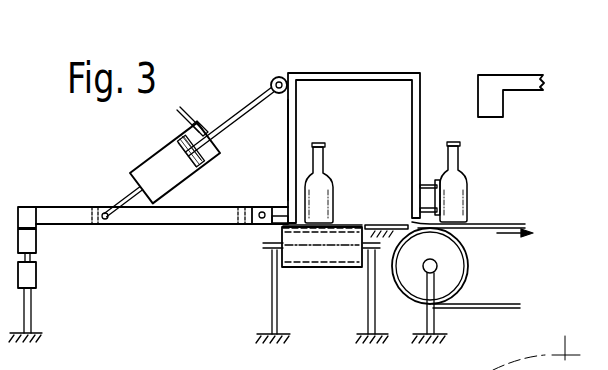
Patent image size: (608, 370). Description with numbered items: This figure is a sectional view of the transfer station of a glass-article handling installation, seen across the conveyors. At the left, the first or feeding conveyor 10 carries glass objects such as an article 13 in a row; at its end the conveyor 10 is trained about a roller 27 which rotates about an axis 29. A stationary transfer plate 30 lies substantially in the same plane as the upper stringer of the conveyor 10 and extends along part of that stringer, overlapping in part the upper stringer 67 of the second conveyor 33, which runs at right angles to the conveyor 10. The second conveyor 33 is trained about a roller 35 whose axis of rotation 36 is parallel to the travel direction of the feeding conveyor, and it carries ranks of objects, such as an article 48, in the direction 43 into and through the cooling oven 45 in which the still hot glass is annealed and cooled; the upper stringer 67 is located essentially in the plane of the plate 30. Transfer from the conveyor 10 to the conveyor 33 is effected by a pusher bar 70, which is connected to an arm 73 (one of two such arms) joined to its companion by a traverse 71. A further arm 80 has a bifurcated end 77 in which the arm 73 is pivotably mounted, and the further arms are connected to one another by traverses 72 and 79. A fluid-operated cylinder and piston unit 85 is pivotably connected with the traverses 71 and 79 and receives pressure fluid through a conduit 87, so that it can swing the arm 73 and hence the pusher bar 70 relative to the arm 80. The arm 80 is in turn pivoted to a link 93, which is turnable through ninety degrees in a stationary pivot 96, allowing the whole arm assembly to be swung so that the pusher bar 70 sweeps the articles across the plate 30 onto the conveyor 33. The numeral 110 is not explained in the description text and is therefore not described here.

The first or feeding conveyor 10 is at (345, 266).
The article 13 is at (331, 172).
The roller 27 is at (303, 263).
The axis 29 is at (272, 252).
The stationary transfer plate 30 is at (384, 223).
The second conveyor 33 is at (520, 308).
The roller 35 is at (467, 283).
The axis of rotation 36 is at (438, 263).
The direction 43 is at (532, 238).
The cooling oven 45 is at (491, 80).
The article 48 is at (468, 172).
The upper stringer 67 is at (500, 224).
The pusher bar 70 is at (431, 204).
The traverse 71 is at (291, 78).
The traverse 72 is at (238, 218).
The arm 73 is at (286, 154).
The bifurcated end 77 is at (258, 225).
The traverse 79 is at (92, 208).
The arm 80 is at (163, 225).
The fluid-operated cylinder and piston unit 85 is at (150, 157).
The conduit 87 is at (189, 113).
The link 93 is at (37, 246).
The stationary pivot 96 is at (37, 280).
The frame 110 is at (297, 113).